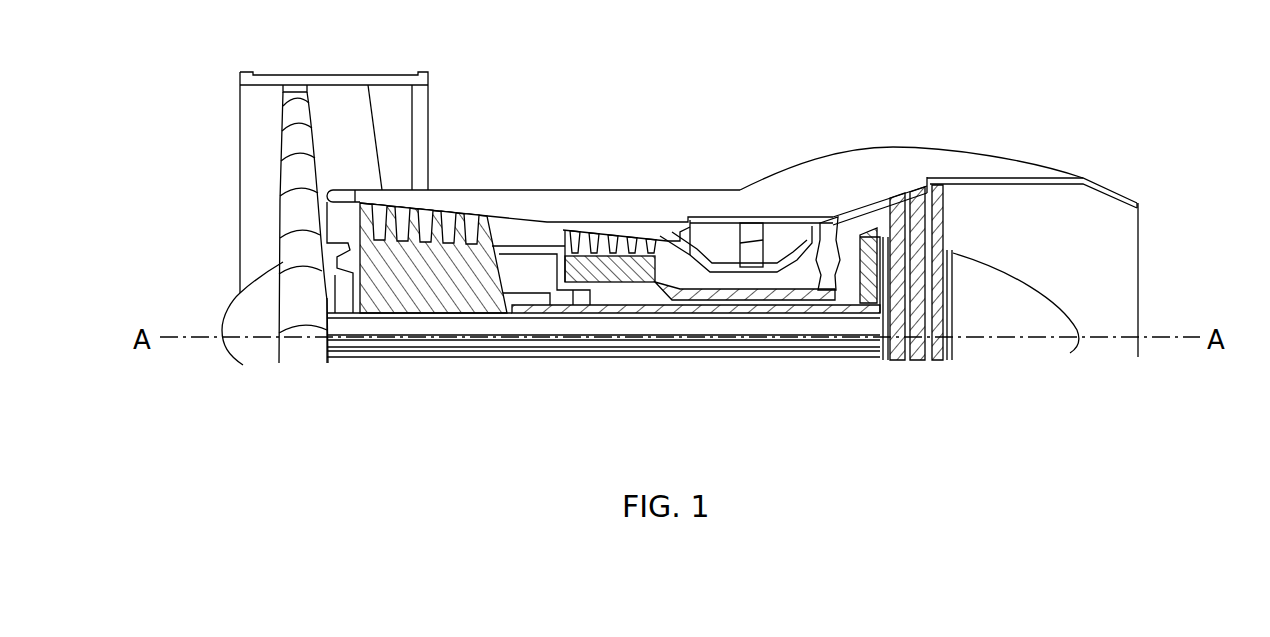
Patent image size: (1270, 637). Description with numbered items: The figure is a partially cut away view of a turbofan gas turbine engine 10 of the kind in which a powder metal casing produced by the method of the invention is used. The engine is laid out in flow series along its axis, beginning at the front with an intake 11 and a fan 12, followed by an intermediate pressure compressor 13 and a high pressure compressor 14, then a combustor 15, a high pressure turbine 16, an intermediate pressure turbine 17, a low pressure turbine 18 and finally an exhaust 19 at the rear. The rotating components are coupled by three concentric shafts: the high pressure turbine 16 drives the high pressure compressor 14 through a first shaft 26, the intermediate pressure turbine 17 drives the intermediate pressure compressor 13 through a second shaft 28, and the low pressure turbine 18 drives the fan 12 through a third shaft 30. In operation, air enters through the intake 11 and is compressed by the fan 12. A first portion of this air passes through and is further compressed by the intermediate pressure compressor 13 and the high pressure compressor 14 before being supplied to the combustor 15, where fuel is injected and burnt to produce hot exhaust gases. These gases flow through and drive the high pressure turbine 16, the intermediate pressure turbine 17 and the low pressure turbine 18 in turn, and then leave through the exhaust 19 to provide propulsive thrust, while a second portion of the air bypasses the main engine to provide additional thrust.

The turbofan gas turbine engine 10 is at (592, 92).
The intake 11 is at (216, 203).
The fan 12 is at (303, 111).
The intermediate pressure compressor 13 is at (432, 252).
The high pressure compressor 14 is at (612, 240).
The combustor 15 is at (753, 200).
The high pressure turbine 16 is at (828, 223).
The intermediate pressure turbine 17 is at (868, 212).
The low pressure turbine 18 is at (940, 198).
The exhaust 19 is at (1127, 278).
The first shaft 26 is at (813, 292).
The second shaft 28 is at (565, 308).
The third shaft 30 is at (460, 358).